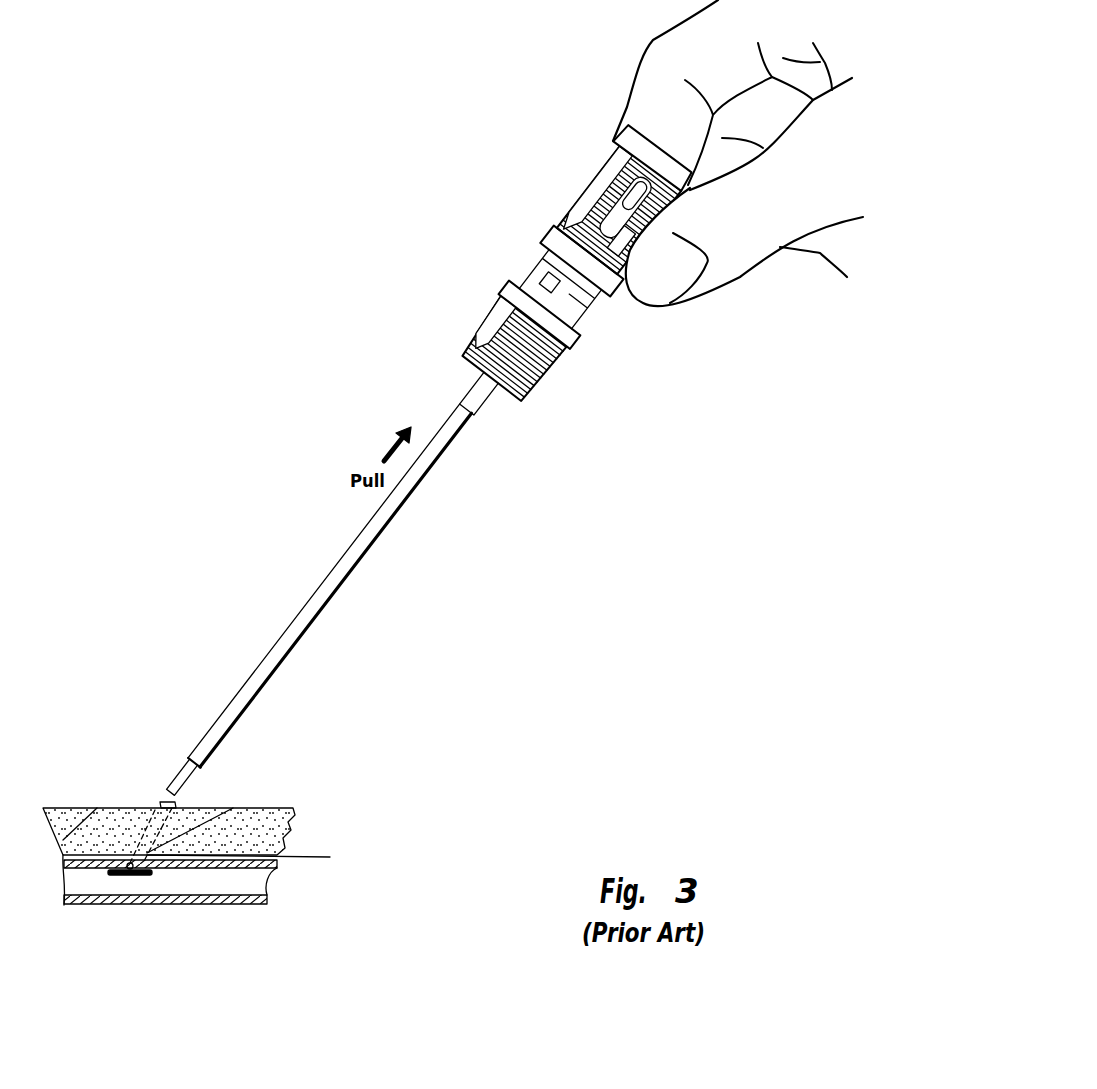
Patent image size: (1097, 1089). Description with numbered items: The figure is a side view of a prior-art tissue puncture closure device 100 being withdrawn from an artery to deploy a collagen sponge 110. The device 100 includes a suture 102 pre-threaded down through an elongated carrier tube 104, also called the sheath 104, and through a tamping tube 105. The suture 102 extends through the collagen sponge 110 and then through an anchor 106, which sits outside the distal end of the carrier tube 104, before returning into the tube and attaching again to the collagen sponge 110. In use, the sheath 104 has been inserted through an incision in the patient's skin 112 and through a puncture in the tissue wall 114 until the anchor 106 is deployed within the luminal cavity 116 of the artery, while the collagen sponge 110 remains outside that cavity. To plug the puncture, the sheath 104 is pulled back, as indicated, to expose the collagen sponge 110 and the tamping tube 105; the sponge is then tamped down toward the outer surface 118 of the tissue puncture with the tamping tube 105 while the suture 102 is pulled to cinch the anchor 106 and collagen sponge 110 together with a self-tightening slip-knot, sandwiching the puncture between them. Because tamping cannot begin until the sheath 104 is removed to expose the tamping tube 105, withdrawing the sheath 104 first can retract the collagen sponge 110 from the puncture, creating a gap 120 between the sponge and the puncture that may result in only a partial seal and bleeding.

The tissue puncture closure device 100 is at (413, 492).
The suture 102 is at (173, 793).
The carrier tube 104 is at (370, 550).
The tamping tube 105 is at (183, 770).
The anchor 106 is at (135, 877).
The collagen sponge 110 is at (137, 852).
The skin 112 is at (257, 812).
The tissue wall 114 is at (257, 873).
The luminal cavity 116 is at (98, 890).
The outer surface 118 is at (123, 858).
The gap 120 is at (255, 856).